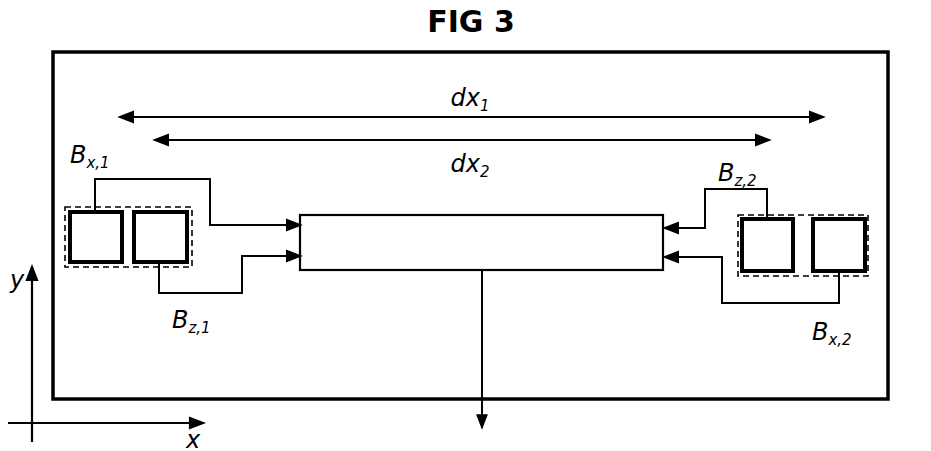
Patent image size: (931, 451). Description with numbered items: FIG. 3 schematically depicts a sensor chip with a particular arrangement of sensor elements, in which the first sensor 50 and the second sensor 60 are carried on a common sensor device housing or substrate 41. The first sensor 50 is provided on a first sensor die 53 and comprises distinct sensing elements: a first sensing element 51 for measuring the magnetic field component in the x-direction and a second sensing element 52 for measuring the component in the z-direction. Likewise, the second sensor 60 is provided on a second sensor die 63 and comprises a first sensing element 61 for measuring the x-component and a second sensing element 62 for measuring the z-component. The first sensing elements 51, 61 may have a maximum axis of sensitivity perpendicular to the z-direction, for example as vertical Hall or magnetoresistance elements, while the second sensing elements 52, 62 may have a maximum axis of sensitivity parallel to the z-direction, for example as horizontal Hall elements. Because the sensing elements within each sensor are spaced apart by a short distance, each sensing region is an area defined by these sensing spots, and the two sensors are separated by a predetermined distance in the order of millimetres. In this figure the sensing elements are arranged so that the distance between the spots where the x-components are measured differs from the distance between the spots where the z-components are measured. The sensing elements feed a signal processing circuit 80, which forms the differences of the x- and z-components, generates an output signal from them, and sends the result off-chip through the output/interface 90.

The sensor device housing / substrate 41 is at (101, 95).
The first sensor 50 is at (127, 273).
The first sensing element 51 is at (83, 254).
The second sensing element 52 is at (160, 237).
The first sensor die 53 is at (94, 270).
The second sensor 60 is at (802, 213).
The first sensing element 61 is at (839, 245).
The second sensing element 62 is at (755, 261).
The second sensor die 63 is at (836, 215).
The signal processing circuit 80 is at (468, 258).
The output/interface 90 is at (483, 350).